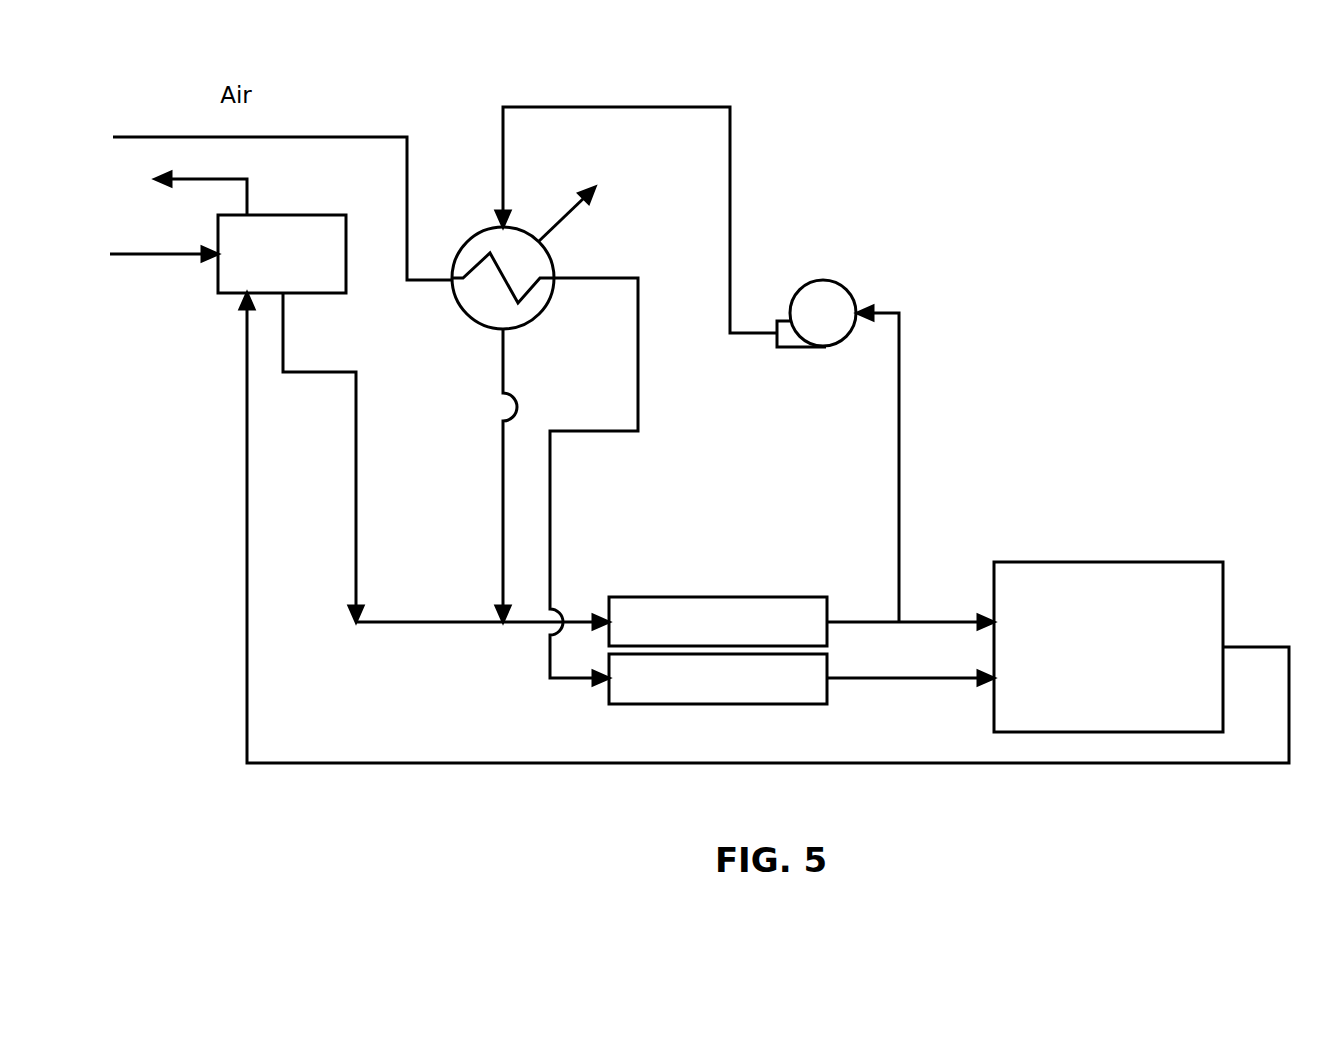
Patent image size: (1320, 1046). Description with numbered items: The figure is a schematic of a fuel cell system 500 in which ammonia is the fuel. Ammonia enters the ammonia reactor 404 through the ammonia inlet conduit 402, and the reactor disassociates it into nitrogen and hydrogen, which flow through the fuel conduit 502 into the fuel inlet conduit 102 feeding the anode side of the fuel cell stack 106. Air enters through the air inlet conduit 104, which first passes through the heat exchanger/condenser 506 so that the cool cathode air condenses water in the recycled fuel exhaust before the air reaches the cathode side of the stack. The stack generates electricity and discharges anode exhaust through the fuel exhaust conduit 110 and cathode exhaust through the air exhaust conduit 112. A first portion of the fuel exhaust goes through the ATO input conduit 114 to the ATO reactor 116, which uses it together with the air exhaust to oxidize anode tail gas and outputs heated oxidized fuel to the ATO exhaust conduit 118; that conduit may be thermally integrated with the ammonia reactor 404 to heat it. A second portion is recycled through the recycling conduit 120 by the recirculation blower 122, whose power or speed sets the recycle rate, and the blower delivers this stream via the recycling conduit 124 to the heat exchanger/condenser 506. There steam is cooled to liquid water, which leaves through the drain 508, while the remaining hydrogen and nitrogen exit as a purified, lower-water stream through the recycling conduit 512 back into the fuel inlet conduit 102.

The system 500 is at (1073, 162).
The fuel inlet conduit 102 is at (481, 621).
The air inlet conduit 104 is at (325, 137).
The fuel cell stack 106 is at (658, 597).
The fuel exhaust conduit 110 is at (866, 621).
The air exhaust conduit 112 is at (912, 681).
The ATO input conduit 114 is at (945, 621).
The ATO reactor 116 is at (1006, 562).
The ATO exhaust conduit 118 is at (214, 178).
The recycling conduit 120 is at (898, 556).
The recirculation blower 122 is at (858, 303).
The recycling conduit 124 is at (733, 293).
The ammonia inlet conduit 402 is at (145, 257).
The ammonia reactor 404 is at (308, 295).
The fuel conduit 502 is at (353, 371).
The heat exchanger/condenser 506 is at (468, 242).
The drain 508 is at (562, 221).
The recycling conduit 512 is at (505, 368).